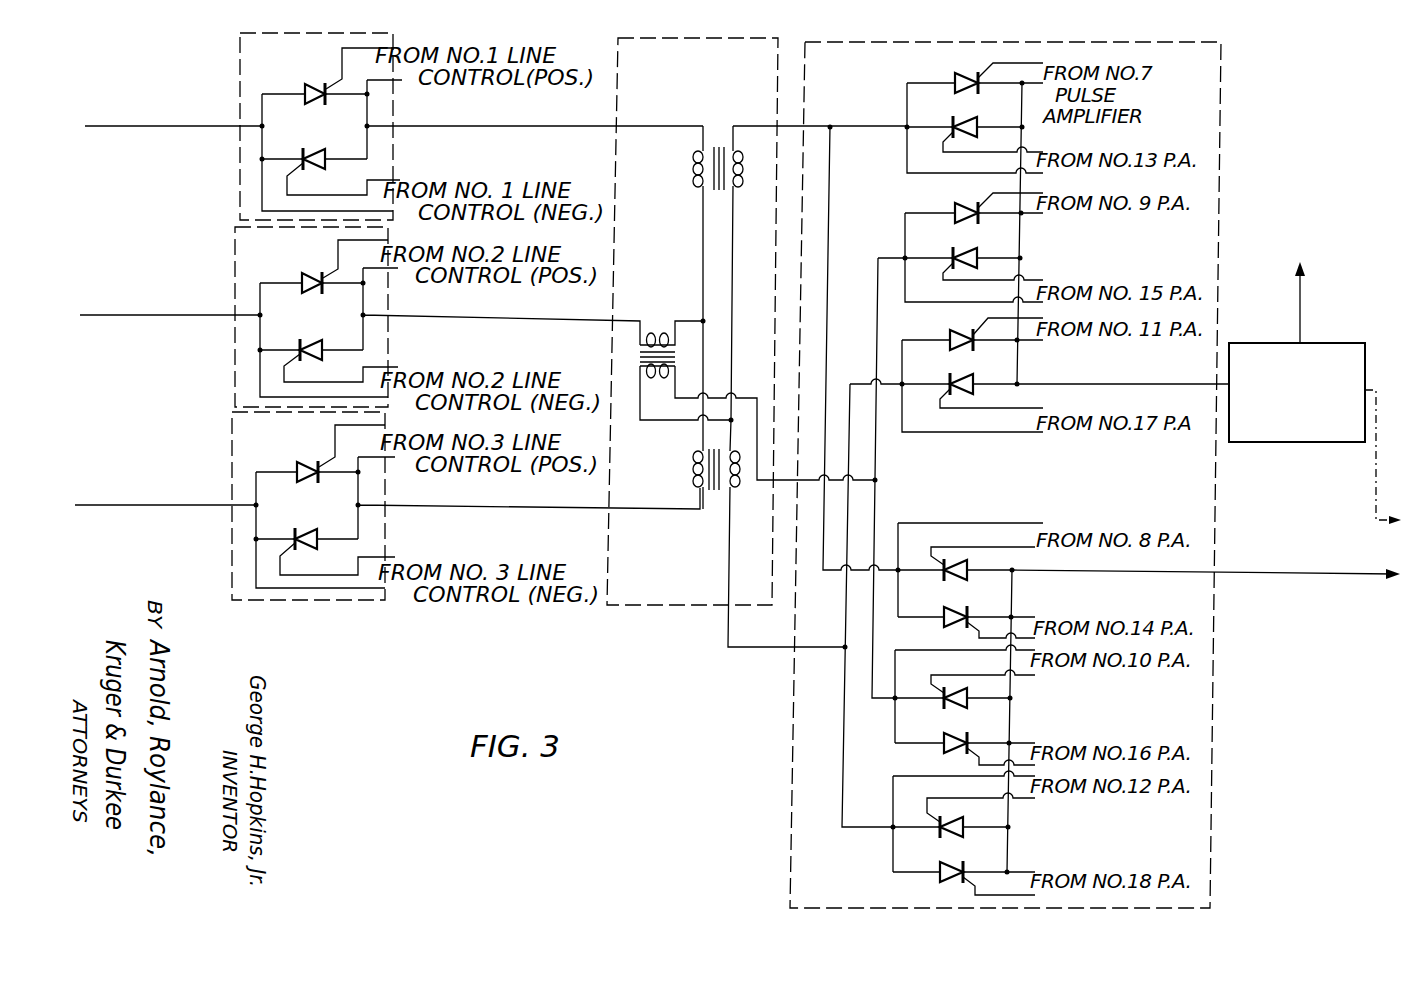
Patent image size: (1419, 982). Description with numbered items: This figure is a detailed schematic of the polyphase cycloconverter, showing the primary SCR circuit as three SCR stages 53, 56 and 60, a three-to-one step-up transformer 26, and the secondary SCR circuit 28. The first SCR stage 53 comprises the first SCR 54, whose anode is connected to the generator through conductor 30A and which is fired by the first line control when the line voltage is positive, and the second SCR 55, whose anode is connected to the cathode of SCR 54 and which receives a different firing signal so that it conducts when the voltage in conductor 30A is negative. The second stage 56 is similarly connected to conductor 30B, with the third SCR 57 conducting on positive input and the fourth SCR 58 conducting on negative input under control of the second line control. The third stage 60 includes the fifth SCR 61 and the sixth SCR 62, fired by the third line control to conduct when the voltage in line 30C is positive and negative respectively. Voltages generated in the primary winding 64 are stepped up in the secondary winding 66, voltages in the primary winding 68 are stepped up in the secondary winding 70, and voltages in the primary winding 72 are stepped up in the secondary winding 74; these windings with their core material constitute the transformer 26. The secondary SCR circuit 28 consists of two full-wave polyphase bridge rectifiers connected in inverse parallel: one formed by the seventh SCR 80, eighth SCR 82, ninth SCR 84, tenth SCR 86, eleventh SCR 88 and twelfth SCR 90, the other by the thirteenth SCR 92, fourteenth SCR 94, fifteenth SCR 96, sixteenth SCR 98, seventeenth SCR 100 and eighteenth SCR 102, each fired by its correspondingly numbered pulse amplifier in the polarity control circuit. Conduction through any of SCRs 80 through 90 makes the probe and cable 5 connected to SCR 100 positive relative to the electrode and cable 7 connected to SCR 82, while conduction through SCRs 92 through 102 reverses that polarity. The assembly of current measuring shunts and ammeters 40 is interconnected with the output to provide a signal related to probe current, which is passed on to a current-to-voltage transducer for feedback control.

The SCR stage 53 is at (238, 40).
The conductor 30A is at (203, 122).
The No. 1 SCR 54 is at (303, 86).
The No. 2 SCR 55 is at (321, 151).
The SCR stage 56 is at (233, 232).
The conductor 30B is at (200, 312).
The No. 3 SCR 57 is at (301, 275).
The No. 4 SCR 58 is at (315, 343).
The third SCR stage 60 is at (230, 421).
The line 30C is at (196, 502).
The No. 5 SCR 61 is at (300, 465).
The No. 6 SCR 62 is at (310, 534).
The step-up transformer 26 is at (657, 608).
The primary winding 64 is at (693, 178).
The secondary winding 66 is at (743, 182).
The primary winding 68 is at (656, 333).
The secondary winding 70 is at (664, 378).
The primary winding 72 is at (693, 471).
The secondary winding 74 is at (740, 489).
The secondary SCR circuit 28 is at (1225, 88).
The No. 7 SCR 80 is at (955, 78).
The No. 13 SCR 92 is at (968, 125).
The No. 9 SCR 84 is at (955, 208).
The No. 15 SCR 96 is at (968, 255).
The No. 11 SCR 88 is at (950, 335).
The No. 17 SCR 100 is at (963, 380).
The No. 8 SCR 82 is at (968, 577).
The No. 14 SCR 94 is at (945, 623).
The No. 10 SCR 86 is at (965, 707).
The No. 16 SCR 98 is at (942, 748).
The No. 12 SCR 90 is at (962, 837).
The No. 18 SCR 102 is at (940, 877).
The assembly of shunts and ammeters 40 is at (1296, 447).
The cable 5 is at (1376, 493).
The cable 7 is at (1350, 582).